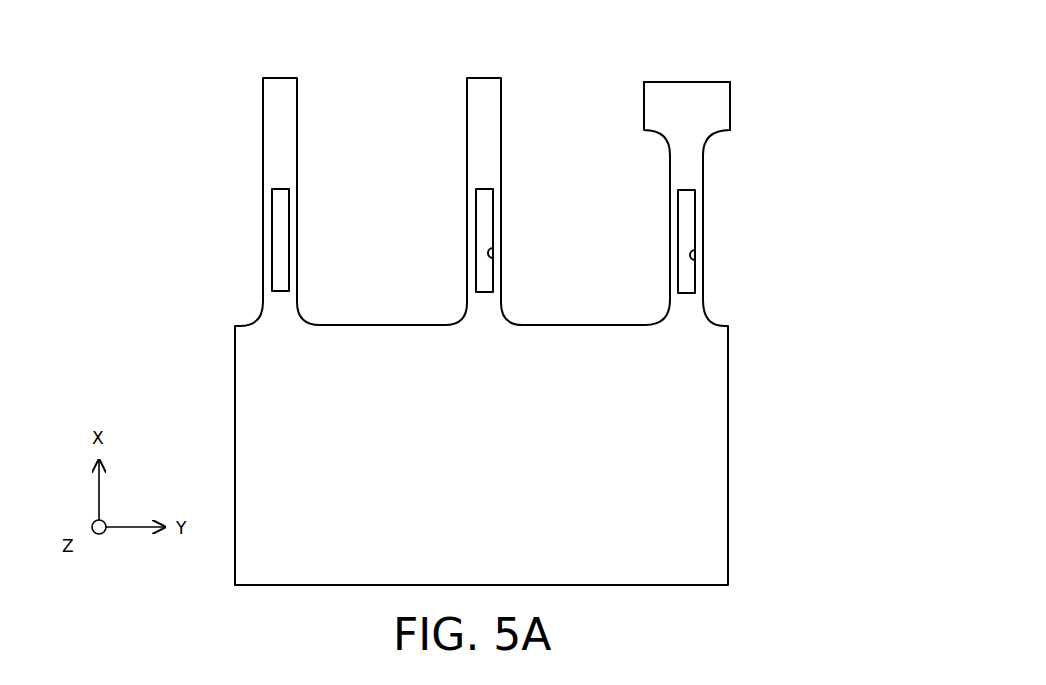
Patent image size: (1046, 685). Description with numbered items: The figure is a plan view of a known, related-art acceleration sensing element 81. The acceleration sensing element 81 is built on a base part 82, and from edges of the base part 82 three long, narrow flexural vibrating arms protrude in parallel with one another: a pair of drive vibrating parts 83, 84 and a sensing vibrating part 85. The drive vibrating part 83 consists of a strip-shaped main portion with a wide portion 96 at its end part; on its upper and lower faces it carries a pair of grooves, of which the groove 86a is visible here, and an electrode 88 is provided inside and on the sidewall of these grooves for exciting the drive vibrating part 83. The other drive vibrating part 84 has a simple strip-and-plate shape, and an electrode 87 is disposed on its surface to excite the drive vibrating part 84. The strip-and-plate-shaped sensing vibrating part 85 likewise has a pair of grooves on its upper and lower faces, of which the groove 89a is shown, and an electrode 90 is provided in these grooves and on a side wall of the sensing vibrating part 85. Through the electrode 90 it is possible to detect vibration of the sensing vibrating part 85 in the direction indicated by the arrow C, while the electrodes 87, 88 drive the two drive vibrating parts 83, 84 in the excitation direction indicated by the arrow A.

The acceleration sensing element 81 is at (237, 65).
The base part 82 is at (710, 505).
The drive vibrating part 83 is at (749, 101).
The drive vibrating part 84 is at (246, 149).
The sensing vibrating part 85 is at (514, 96).
The groove 86a is at (696, 257).
The electrode 87 is at (280, 223).
The electrode 88 is at (687, 218).
The groove 89a is at (494, 255).
The electrode 90 is at (487, 213).
The wide portion 96 is at (656, 86).